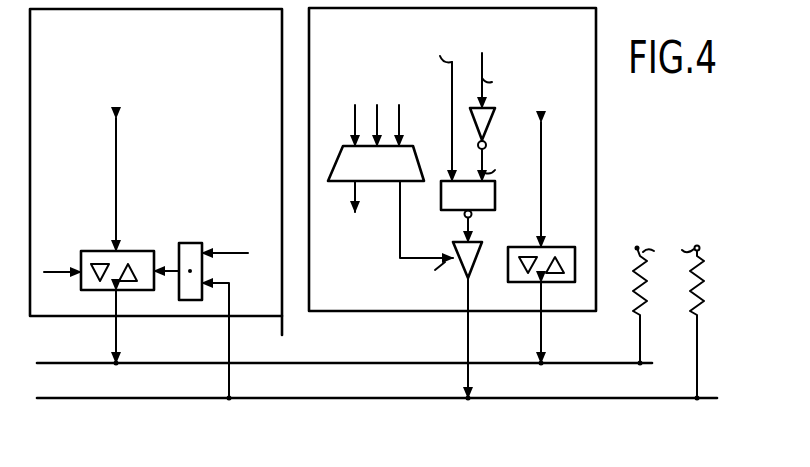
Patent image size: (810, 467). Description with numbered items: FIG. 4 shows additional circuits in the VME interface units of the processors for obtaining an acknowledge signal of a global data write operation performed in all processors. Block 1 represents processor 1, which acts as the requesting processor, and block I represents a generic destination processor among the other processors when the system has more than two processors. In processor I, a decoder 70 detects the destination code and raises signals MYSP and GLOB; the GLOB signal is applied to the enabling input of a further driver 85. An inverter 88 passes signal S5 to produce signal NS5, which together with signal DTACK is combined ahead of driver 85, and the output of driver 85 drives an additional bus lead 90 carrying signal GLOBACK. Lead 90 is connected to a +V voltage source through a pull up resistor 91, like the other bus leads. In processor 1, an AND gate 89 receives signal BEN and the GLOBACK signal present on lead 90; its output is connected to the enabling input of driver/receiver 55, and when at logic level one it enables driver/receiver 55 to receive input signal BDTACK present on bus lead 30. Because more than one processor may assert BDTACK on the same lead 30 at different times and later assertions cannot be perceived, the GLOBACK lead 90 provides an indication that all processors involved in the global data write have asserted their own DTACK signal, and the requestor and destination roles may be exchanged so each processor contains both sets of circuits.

The processor 1 is at (248, 317).
The generic processor I is at (585, 312).
The bus lead 30 is at (444, 360).
The driver/receiver 55 is at (148, 242).
The decoder 70 is at (413, 147).
The driver 85 is at (485, 245).
The inverter 88 is at (488, 125).
The AND gate 89 is at (205, 268).
The bus lead 90 is at (375, 400).
The pull up resistor 91 is at (690, 312).